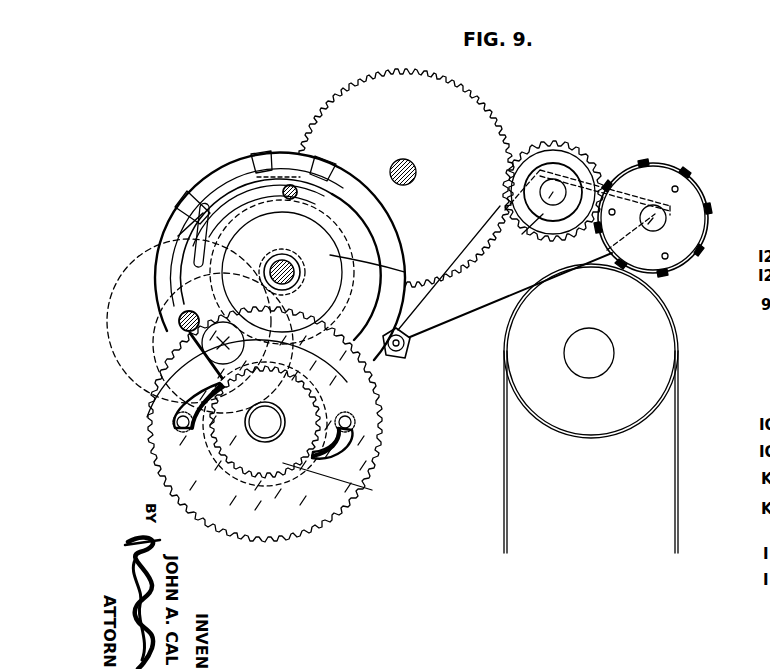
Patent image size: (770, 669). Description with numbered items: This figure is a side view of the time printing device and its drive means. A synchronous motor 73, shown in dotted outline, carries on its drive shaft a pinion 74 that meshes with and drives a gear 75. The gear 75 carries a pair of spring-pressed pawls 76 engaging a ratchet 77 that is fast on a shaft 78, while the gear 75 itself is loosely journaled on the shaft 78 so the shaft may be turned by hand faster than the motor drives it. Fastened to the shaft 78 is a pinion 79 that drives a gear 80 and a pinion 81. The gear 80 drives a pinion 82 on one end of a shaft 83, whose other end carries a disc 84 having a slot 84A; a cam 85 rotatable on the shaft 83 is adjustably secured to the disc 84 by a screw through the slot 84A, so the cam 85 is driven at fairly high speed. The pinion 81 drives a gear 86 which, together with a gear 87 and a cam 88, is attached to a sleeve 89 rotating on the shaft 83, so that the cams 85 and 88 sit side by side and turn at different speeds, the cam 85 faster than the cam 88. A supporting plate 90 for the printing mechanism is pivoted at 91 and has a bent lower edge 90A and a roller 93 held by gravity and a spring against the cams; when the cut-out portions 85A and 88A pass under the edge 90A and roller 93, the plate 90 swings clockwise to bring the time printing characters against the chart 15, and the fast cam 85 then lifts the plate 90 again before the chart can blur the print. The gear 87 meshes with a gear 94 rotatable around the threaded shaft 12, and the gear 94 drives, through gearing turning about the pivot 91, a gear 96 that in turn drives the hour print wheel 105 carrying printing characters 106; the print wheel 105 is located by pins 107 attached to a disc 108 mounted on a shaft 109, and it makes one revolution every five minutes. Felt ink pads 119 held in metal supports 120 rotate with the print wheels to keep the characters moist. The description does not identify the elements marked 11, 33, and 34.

The frame 11 is at (453, 212).
The threaded shaft 12 is at (404, 160).
The chart 15 is at (679, 414).
The wheel 33 is at (622, 434).
The hub 34 is at (608, 357).
The synchronous motor 73 is at (142, 246).
The pinion 74 is at (179, 319).
The gear 75 is at (288, 521).
The pawls 76 is at (176, 420).
The ratchet 77 is at (339, 482).
The shaft 78 is at (262, 425).
The pinion 79 is at (152, 460).
The gear 80 is at (152, 348).
The pinion 81 is at (160, 372).
The pinion 82 is at (270, 262).
The shaft 83 is at (292, 266).
The disc 84 is at (190, 198).
The slot 84A is at (190, 225).
The cam 85 is at (230, 180).
The cut-out portion 85A is at (294, 178).
The gear 86 is at (393, 283).
The gear 87 is at (322, 300).
The cam 88 is at (198, 190).
The cut-out portion 88A is at (262, 160).
The sleeve 89 is at (286, 256).
The supporting plate 90 is at (483, 305).
The bent lower edge 90A is at (399, 358).
The pivot 91 is at (556, 192).
The roller 93 is at (412, 342).
The gear 94 is at (357, 88).
The gear 96 is at (547, 146).
The hour print wheel 105 is at (662, 163).
The printing characters 106 is at (686, 172).
The pins 107 is at (679, 190).
The disc 108 is at (672, 253).
The shaft 109 is at (664, 222).
The felt ink pads 119 is at (562, 158).
The metal supports 120 is at (538, 228).